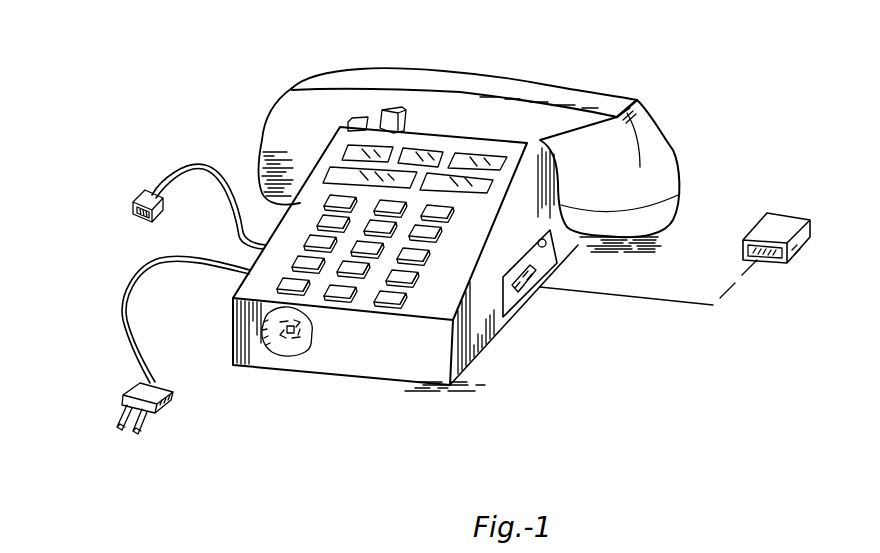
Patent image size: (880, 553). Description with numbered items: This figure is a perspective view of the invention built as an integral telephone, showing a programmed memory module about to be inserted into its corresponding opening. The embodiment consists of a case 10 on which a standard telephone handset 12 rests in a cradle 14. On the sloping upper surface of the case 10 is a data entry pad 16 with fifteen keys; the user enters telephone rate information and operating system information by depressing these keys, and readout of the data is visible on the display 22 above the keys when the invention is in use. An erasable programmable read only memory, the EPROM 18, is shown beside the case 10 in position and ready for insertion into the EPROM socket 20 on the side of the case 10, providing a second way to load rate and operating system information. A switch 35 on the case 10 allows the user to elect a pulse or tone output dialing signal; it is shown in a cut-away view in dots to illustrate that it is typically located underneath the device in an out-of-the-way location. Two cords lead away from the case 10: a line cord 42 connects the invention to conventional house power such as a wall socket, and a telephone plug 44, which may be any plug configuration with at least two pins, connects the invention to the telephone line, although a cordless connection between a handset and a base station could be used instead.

The case 10 is at (567, 279).
The telephone handset 12 is at (650, 140).
The cradle 14 is at (390, 113).
The data entry pad 16 is at (395, 237).
The EPROM 18 is at (784, 230).
The EPROM socket 20 is at (520, 283).
The display 22 is at (483, 160).
The switch 35 is at (300, 348).
The line cord 42 is at (140, 393).
The telephone plug 44 is at (138, 195).